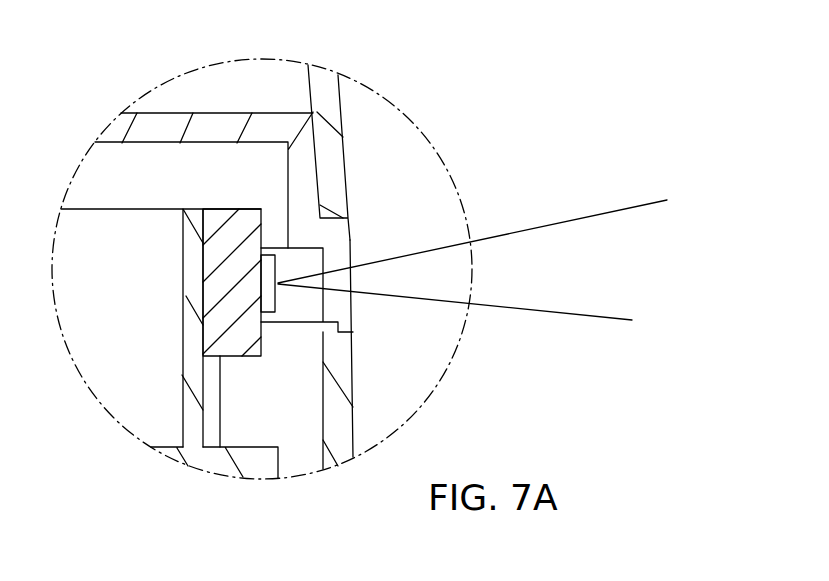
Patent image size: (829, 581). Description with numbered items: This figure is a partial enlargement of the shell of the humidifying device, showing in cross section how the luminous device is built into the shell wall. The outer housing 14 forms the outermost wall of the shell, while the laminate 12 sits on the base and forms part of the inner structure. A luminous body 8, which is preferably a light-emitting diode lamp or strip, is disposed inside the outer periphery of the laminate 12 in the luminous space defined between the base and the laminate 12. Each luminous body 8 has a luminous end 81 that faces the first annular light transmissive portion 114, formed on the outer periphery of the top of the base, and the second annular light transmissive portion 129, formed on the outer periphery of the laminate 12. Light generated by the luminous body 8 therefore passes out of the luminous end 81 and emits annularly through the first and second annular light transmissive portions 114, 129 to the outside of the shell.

The laminate 12 is at (232, 236).
The outer housing 14 is at (332, 107).
The luminous body 8 is at (388, 231).
The second annular light transmissive portion 129 is at (277, 282).
The luminous end 81 is at (279, 296).
The first annular light transmissive portion 114 is at (347, 370).